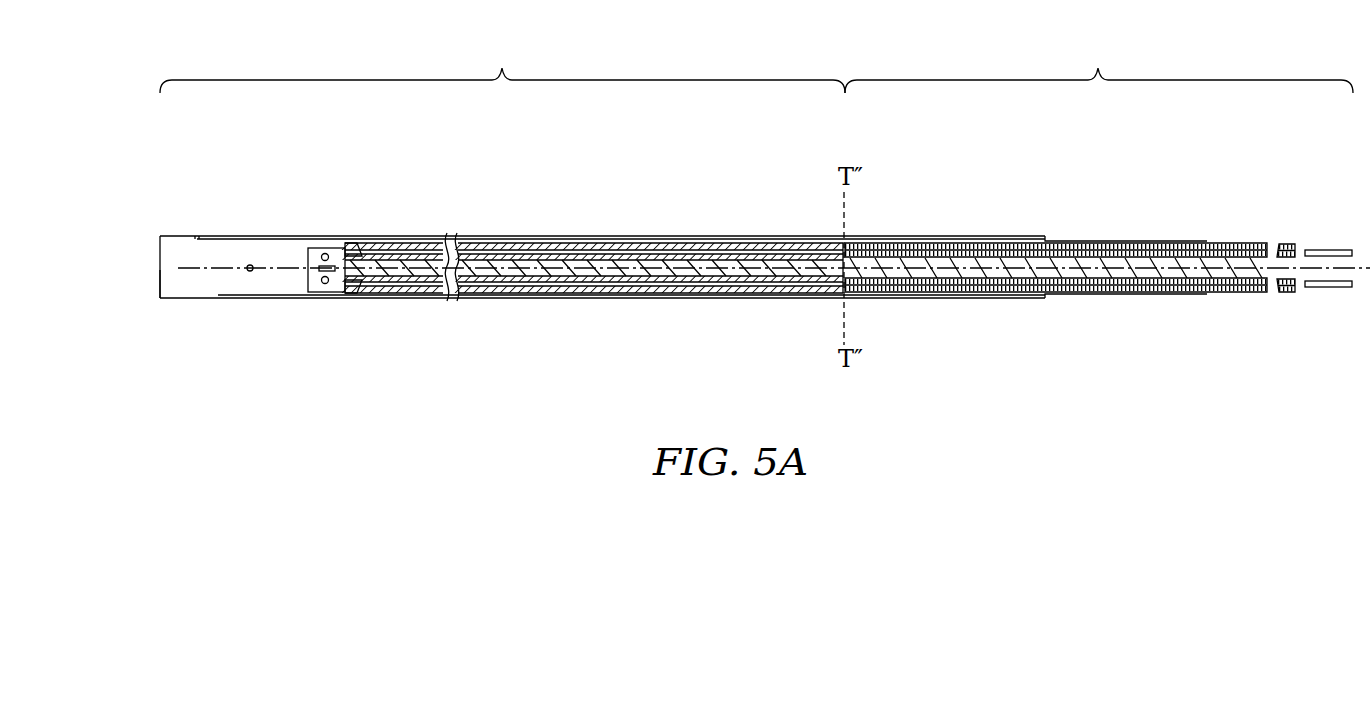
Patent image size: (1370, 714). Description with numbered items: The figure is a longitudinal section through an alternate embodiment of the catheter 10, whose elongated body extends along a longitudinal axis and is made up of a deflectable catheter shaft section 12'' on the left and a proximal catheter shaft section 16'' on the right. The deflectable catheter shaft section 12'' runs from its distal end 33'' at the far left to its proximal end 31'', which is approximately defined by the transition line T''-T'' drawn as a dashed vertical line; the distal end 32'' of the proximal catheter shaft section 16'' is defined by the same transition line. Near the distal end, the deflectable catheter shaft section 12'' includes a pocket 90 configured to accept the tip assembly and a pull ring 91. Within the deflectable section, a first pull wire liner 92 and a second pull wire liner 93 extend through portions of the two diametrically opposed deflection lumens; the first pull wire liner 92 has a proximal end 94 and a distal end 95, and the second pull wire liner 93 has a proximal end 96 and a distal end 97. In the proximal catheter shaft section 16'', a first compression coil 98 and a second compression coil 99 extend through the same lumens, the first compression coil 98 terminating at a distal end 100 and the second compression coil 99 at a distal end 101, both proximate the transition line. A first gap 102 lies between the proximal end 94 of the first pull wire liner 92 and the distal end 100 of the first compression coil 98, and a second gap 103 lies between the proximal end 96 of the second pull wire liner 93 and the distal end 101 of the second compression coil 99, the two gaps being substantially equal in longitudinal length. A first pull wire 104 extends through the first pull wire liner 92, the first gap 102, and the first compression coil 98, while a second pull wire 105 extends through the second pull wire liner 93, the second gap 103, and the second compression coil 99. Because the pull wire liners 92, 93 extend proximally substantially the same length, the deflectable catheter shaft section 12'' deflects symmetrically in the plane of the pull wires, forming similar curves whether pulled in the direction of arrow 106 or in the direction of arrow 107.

The catheter 10 is at (308, 412).
The deflectable catheter shaft section 12'' is at (502, 65).
The proximal catheter shaft section 16'' is at (1099, 65).
The proximal end 31'' is at (868, 210).
The distal end 32'' is at (1056, 222).
The distal end 33'' is at (146, 319).
The pocket 90 is at (204, 244).
The pull ring 91 is at (306, 250).
The first pull wire liner 92 is at (640, 294).
The second pull wire liner 93 is at (649, 244).
The proximal end 94 is at (797, 292).
The distal end 95 is at (361, 292).
The proximal end 96 is at (796, 248).
The distal end 97 is at (356, 243).
The first compression coil 98 is at (1234, 278).
The second compression coil 99 is at (1240, 260).
The distal end 100 is at (860, 294).
The distal end 101 is at (862, 248).
The first gap 102 is at (827, 294).
The second gap 103 is at (828, 248).
The first pull wire 104 is at (1327, 288).
The second pull wire 105 is at (1328, 250).
The arrow 106 is at (380, 368).
The arrow 107 is at (380, 168).